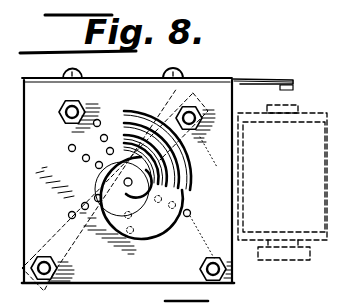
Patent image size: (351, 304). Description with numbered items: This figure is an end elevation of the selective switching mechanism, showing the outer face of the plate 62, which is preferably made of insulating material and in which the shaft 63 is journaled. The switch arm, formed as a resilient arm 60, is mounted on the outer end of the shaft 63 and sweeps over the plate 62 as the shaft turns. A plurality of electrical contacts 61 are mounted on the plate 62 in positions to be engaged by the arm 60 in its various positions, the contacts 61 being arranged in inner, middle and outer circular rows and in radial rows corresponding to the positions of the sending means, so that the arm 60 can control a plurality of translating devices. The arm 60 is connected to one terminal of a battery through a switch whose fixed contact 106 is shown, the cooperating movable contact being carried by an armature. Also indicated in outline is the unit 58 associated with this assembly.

The motor unit (dashed outline) 58 is at (282, 182).
The resilient arm 60 is at (143, 175).
The electrical contacts 61 is at (108, 152).
The plate 62 is at (128, 179).
The shaft 63 is at (127, 186).
The fixed contact 106 is at (294, 88).